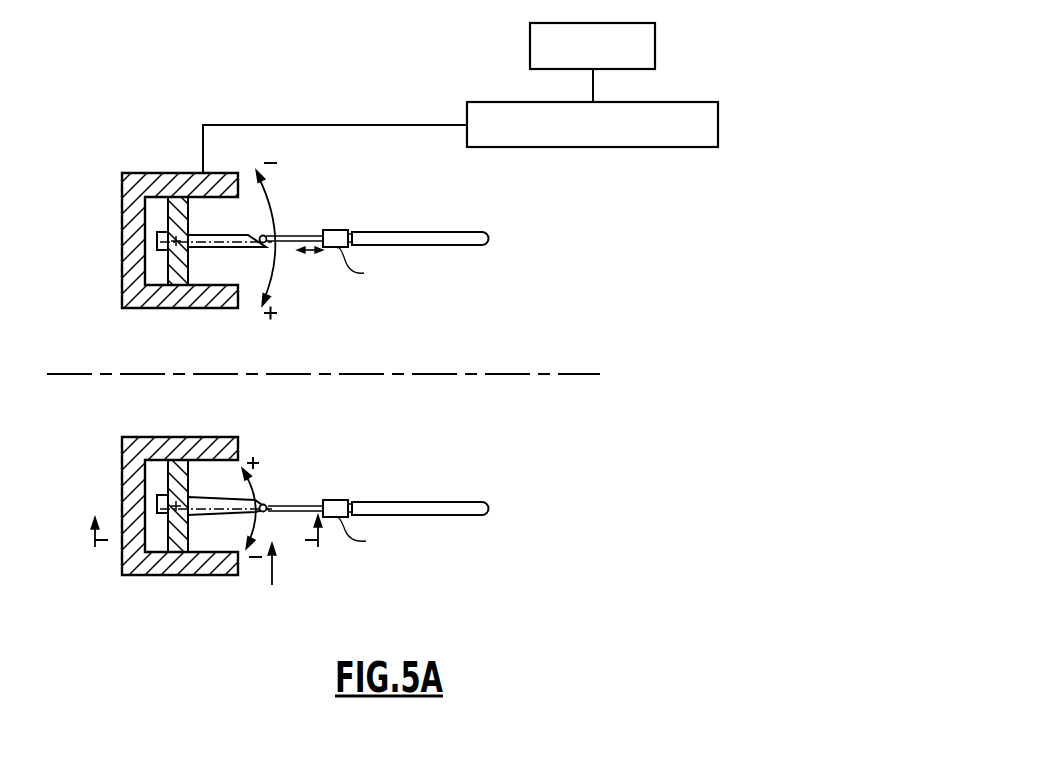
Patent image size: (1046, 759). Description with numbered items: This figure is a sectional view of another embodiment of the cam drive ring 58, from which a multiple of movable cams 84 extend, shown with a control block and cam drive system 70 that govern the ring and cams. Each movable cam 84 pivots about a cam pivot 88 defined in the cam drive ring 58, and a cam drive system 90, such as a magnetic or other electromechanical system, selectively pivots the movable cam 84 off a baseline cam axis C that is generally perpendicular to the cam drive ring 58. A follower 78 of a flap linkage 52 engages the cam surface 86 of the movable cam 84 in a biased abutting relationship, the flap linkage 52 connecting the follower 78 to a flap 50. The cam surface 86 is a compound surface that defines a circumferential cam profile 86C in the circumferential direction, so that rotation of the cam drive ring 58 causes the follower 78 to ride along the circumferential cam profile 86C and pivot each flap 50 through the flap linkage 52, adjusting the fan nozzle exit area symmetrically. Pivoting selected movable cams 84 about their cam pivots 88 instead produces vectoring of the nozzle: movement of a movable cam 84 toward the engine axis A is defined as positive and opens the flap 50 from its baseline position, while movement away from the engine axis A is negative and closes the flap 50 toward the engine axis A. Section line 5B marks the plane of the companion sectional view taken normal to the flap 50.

The cam drive system 70 is at (718, 128).
The cam drive ring 58 is at (142, 173).
The cam pivot 88 is at (160, 239).
The cam drive system 90 is at (157, 268).
The movable cam 84 is at (233, 233).
The baseline cam axis C is at (222, 244).
The follower 78 is at (274, 294).
The circumferential cam profile 86C is at (254, 196).
The cam surface 86 is at (272, 586).
The flap linkage 52 is at (313, 230).
The flap 50 is at (420, 240).
The engine axis A is at (302, 375).
The section view 5B is at (210, 548).